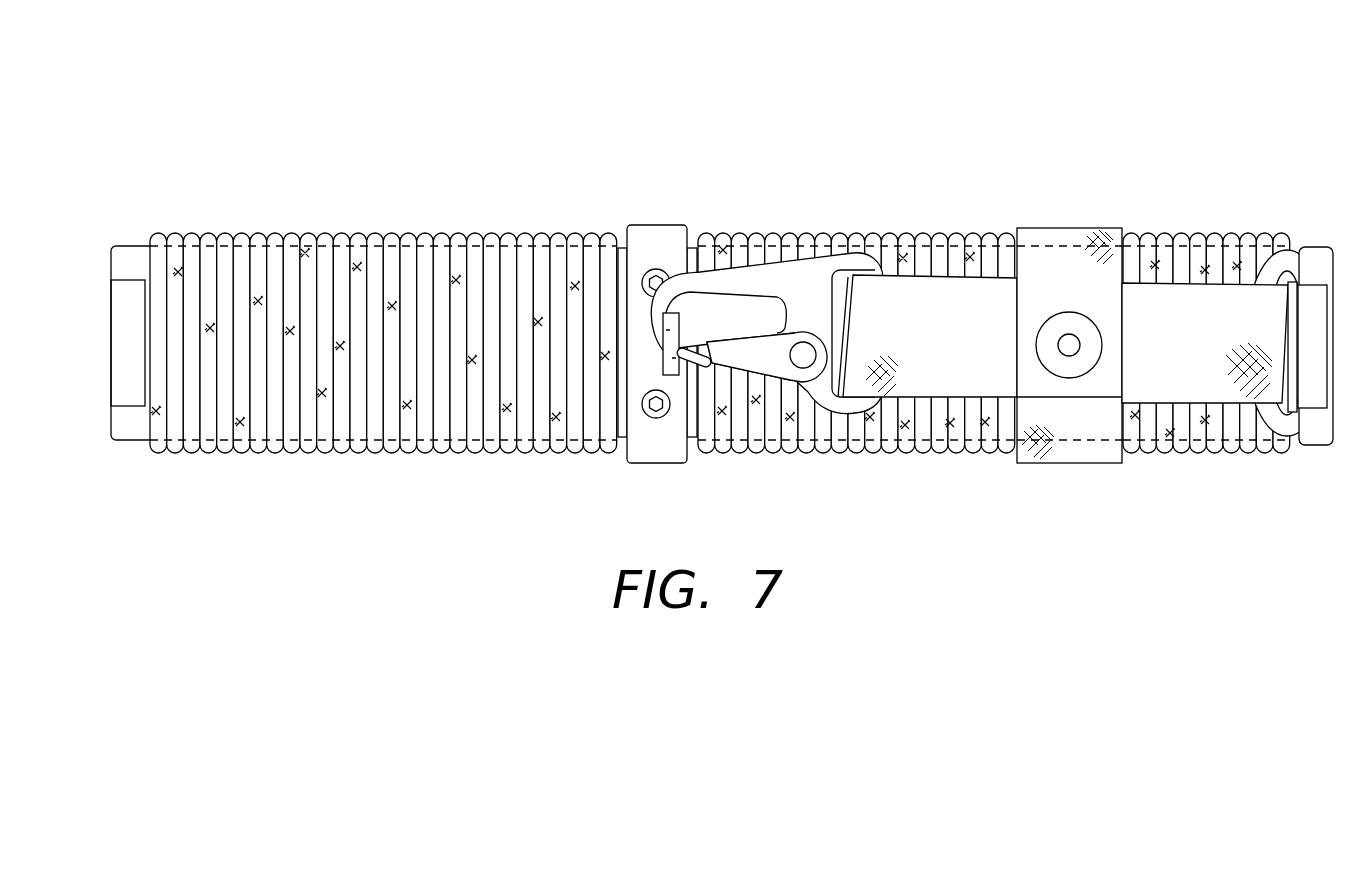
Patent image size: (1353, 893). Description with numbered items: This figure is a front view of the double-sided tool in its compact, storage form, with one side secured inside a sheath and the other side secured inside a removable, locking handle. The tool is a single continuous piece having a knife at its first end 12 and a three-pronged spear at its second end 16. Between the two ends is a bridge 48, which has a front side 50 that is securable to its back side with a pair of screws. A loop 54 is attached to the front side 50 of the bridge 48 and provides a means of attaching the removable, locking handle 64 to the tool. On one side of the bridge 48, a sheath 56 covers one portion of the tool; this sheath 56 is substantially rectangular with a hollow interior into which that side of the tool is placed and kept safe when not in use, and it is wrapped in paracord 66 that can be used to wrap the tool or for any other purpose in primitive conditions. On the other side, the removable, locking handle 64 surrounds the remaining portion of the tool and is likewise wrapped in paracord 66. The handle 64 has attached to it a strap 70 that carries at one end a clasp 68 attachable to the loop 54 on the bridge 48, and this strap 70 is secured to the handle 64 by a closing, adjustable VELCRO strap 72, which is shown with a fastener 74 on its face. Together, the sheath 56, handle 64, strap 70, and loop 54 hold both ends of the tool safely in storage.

The first end 12 is at (132, 220).
The second end 16 is at (1287, 343).
The bridge 48 is at (654, 266).
The front side 50 is at (673, 235).
The loop 54 is at (670, 374).
The sheath 56 is at (720, 264).
The removable, locking handle 64 is at (872, 232).
The paracord 66 is at (428, 237).
The snap hook 68 is at (792, 237).
The strap 70 is at (1184, 280).
The closing, adjustable VELCRO strap 72 is at (1069, 311).
The rivet 74 is at (1060, 323).